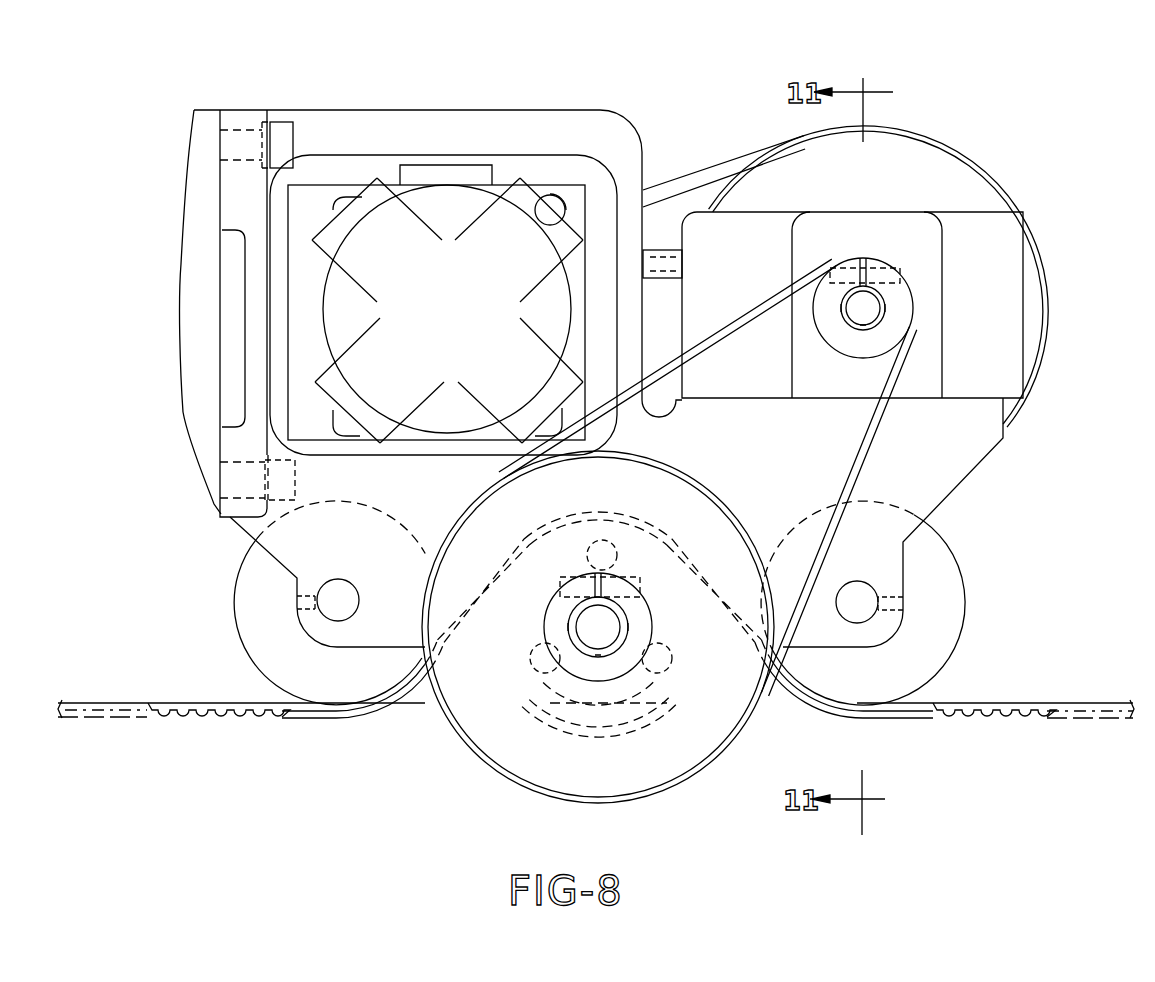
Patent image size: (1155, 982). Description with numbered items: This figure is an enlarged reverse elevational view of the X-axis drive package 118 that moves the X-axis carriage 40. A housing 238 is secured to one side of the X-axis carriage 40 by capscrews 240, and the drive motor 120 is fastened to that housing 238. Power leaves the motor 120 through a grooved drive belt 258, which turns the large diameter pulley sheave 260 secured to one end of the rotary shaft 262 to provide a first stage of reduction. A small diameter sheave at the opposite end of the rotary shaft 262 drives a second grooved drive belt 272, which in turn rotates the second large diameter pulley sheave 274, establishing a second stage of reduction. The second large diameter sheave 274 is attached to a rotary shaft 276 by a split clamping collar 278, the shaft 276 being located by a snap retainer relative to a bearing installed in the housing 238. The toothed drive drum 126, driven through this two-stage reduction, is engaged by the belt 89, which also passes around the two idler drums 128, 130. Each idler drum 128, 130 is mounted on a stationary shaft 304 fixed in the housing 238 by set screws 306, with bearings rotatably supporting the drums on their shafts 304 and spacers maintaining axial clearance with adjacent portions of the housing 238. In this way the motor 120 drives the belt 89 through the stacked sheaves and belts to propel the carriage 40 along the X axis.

The X-axis carriage 40 is at (190, 118).
The housing 238 is at (286, 90).
The capscrews 240 is at (283, 118).
The drive motor 120 is at (420, 302).
The grooved drive belt 258 is at (674, 172).
The large diameter pulley sheave 260 is at (730, 188).
The X-axis drive package 118 is at (1008, 115).
The rotary shaft 262 is at (886, 298).
The second grooved drive belt 272 is at (858, 454).
The second large diameter pulley sheave 274 is at (492, 733).
The rotary shaft 276 is at (592, 624).
The split clamping collar 278 is at (658, 606).
The toothed drive drum 126 is at (660, 718).
The idler drum 128 is at (968, 598).
The idler drum 130 is at (242, 652).
The stationary shafts 304 is at (343, 592).
The set screws 306 is at (296, 588).
The belt 89 is at (166, 700).